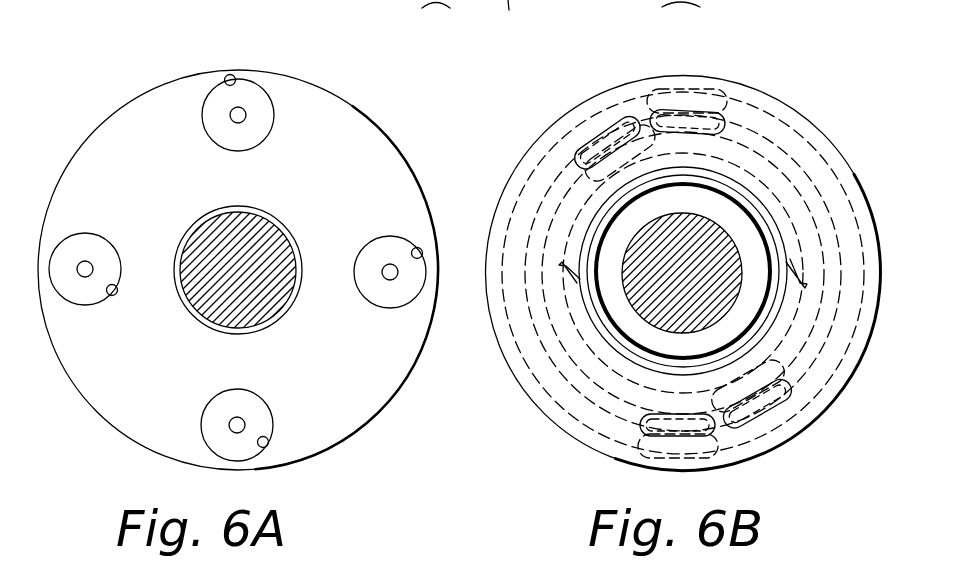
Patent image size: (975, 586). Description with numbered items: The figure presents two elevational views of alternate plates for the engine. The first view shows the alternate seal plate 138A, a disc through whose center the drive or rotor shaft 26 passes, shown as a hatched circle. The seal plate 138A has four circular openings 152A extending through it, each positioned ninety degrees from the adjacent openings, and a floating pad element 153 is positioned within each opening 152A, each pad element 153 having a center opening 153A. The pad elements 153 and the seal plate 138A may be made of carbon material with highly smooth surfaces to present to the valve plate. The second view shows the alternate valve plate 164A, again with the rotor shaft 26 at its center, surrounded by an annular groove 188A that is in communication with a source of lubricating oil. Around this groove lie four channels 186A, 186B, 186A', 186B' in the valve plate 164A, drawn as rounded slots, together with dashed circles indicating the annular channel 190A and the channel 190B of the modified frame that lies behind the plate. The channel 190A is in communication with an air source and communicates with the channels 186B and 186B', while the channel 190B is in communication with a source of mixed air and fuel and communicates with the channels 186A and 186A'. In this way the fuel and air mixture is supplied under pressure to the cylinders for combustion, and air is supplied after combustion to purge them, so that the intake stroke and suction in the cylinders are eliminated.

In FIG. 6A, the alternate seal plate 138A is at (372, 114).
In FIG. 6A, the rotor shaft 26 is at (268, 230).
In FIG. 6B, the rotor shaft 26 is at (715, 298).
In FIG. 6A, the floating pad element 153 is at (222, 107).
In FIG. 6A, the center opening 153A is at (247, 113).
In FIG. 6A, the circular opening 152A is at (228, 80).
In FIG. 6B, the alternate valve plate 164A is at (598, 92).
In FIG. 6B, the annular groove 188A is at (778, 230).
In FIG. 6B, the annular channel 190A is at (580, 177).
In FIG. 6B, the channel 190B is at (547, 176).
In FIG. 6B, the channel 186A is at (747, 99).
In FIG. 6B, the channel 186B is at (633, 108).
In FIG. 6B, the channel 186A' is at (625, 458).
In FIG. 6B, the channel 186B' is at (760, 423).